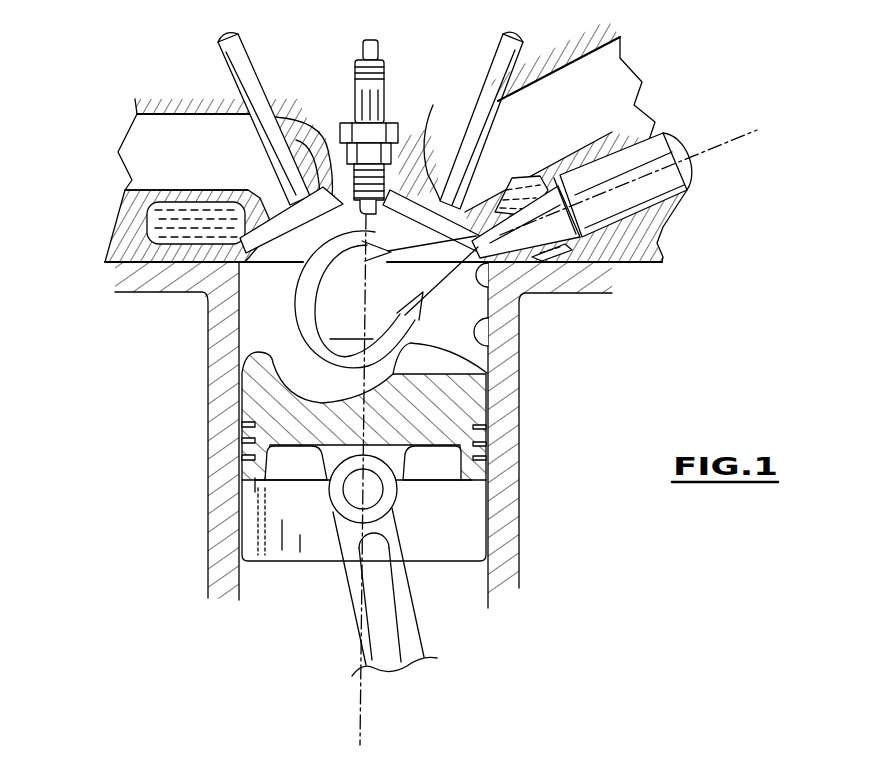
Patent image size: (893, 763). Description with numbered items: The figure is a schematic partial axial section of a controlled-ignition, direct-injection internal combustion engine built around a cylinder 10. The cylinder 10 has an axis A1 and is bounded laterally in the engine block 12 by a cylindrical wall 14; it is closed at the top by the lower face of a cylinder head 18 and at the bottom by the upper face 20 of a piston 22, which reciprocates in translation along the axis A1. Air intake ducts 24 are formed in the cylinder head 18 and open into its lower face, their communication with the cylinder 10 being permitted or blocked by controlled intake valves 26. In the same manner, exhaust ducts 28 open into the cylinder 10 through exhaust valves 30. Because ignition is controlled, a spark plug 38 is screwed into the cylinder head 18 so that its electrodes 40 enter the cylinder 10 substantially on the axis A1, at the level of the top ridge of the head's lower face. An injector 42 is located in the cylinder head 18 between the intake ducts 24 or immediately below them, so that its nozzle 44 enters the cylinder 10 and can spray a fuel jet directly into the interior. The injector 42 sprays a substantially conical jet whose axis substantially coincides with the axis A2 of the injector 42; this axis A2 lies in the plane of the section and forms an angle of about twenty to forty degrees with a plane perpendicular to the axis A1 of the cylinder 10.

The cylinder 10 is at (250, 305).
The engine block 12 is at (503, 482).
The cylindrical wall 14 is at (490, 347).
The cylinder head 18 is at (132, 221).
The upper face 20 is at (242, 357).
The piston 22 is at (240, 414).
The air intake ducts 24 is at (580, 85).
The intake valves 26 is at (387, 202).
The exhaust ducts 28 is at (186, 133).
The exhaust valves 30 is at (283, 182).
The spark plug 38 is at (387, 63).
The electrodes 40 is at (321, 190).
The injector 42 is at (677, 193).
The nozzle 44 is at (480, 270).
The axis of cylinder A1 is at (360, 718).
The axis of injector A2 is at (730, 133).